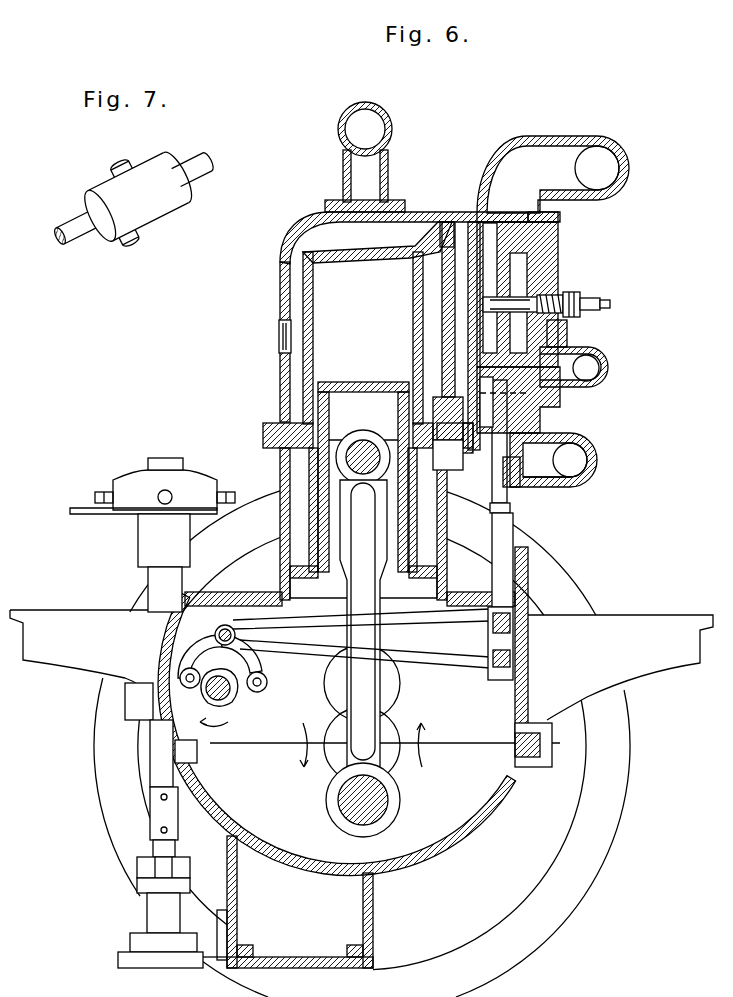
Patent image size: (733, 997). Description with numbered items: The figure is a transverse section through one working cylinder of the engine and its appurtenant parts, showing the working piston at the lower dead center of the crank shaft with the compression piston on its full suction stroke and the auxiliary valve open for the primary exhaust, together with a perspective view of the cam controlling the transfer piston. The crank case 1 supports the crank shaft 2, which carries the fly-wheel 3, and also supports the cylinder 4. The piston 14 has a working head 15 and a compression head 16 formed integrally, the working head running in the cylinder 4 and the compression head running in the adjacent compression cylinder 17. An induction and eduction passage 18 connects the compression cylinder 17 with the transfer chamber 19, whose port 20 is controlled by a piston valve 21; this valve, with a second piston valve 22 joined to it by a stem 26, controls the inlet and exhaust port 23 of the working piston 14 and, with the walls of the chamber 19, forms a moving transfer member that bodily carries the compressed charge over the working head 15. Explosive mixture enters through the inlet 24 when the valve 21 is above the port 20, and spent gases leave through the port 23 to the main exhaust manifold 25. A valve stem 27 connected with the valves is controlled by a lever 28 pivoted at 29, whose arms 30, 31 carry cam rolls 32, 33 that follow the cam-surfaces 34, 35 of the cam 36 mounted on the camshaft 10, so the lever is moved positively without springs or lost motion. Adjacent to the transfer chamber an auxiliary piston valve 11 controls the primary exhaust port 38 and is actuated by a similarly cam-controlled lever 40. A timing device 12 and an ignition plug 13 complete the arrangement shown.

In FIG. 6, the crank case 1 is at (480, 830).
In FIG. 6, the crank shaft 2 is at (388, 802).
In FIG. 6, the fly-wheel 3 is at (575, 862).
In FIG. 6, the cylinder 4 is at (303, 315).
In FIG. 6, the camshaft 10 is at (228, 698).
In FIG. 7, the camshaft 10 is at (60, 247).
In FIG. 6, the auxiliary piston valve 11 is at (570, 293).
In FIG. 6, the timing device 12 is at (128, 485).
In FIG. 6, the ignition plug 13 is at (587, 300).
In FIG. 6, the piston 14 is at (312, 482).
In FIG. 6, the working head 15 is at (365, 380).
In FIG. 6, the compression head 16 is at (440, 540).
In FIG. 6, the compression cylinder 17 is at (298, 508).
In FIG. 6, the induction and eduction passage 18 is at (432, 425).
In FIG. 6, the transfer chamber 19 is at (560, 390).
In FIG. 6, the port 20 is at (532, 485).
In FIG. 6, the piston valve 21 is at (537, 417).
In FIG. 6, the piston valve 22 is at (507, 237).
In FIG. 6, the inlet and exhaust port 23 is at (463, 258).
In FIG. 6, the inlet 24 is at (580, 463).
In FIG. 6, the main exhaust manifold 25 is at (607, 167).
In FIG. 6, the stem 26 is at (563, 333).
In FIG. 6, the valve stem 27 is at (550, 487).
In FIG. 6, the lever 28 is at (418, 627).
In FIG. 6, the pivot 29 is at (215, 633).
In FIG. 6, the arm 30 is at (258, 657).
In FIG. 6, the arm 31 is at (190, 655).
In FIG. 6, the cam roll 32 is at (263, 683).
In FIG. 6, the cam roll 33 is at (183, 682).
In FIG. 7, the cam-surface 34 is at (107, 235).
In FIG. 7, the cam-surface 35 is at (133, 157).
In FIG. 7, the cam 36 is at (157, 197).
In FIG. 6, the primary exhaust port 38 is at (533, 307).
In FIG. 6, the lever 40 is at (460, 653).